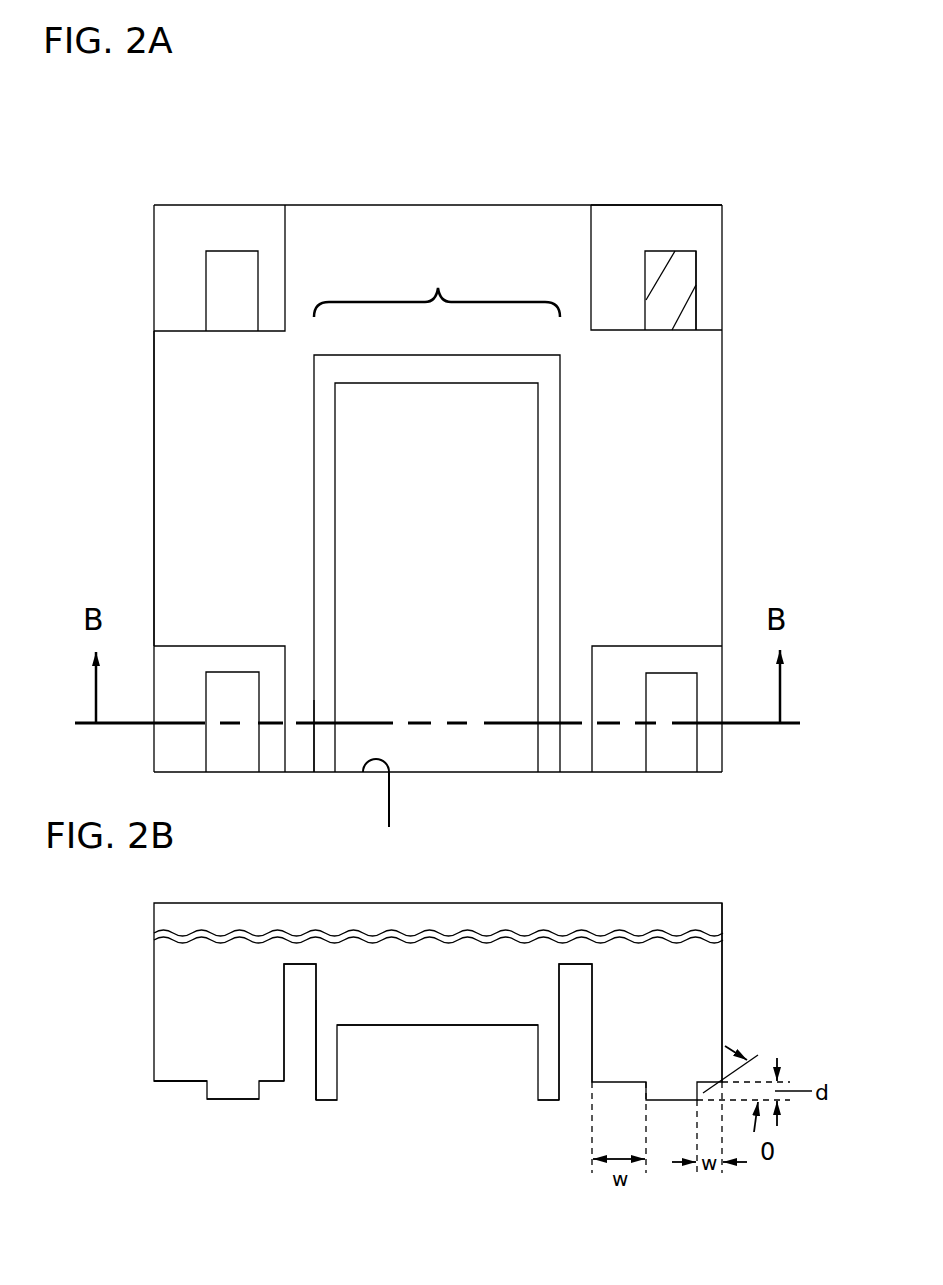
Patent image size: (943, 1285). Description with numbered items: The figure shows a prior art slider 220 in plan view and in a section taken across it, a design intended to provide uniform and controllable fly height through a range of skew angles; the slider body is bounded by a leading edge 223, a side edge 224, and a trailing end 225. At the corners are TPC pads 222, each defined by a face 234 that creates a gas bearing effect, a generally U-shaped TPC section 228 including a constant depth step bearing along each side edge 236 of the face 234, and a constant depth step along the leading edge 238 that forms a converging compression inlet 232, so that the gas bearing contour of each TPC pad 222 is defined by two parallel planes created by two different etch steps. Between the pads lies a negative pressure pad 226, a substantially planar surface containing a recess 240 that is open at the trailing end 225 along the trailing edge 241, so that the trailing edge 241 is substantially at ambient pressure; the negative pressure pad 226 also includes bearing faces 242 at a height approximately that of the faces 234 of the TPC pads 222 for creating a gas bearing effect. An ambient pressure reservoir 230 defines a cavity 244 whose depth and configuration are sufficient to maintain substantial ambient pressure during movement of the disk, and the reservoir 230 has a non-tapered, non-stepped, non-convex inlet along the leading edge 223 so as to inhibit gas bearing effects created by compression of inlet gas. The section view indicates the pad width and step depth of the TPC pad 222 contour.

In FIG. 2A, the stator pole structure 220 is at (82, 455).
In FIG. 2A, the TPC pad 222 is at (154, 251).
In FIG. 2B, the TPC pad 222 is at (133, 1103).
In FIG. 2A, the leading edge 223 is at (473, 205).
In FIG. 2A, the right side edge 224 is at (722, 438).
In FIG. 2B, the right side edge 224 is at (722, 970).
In FIG. 2A, the trailing end 225 is at (517, 772).
In FIG. 2A, the negative pressure pad 226 is at (489, 827).
In FIG. 2A, the TPC section 228 is at (712, 283).
In FIG. 2B, the TPC section 228 is at (179, 1081).
In FIG. 2A, the ambient pressure reservoir 230 is at (193, 499).
In FIG. 2B, the ambient pressure reservoir 230 is at (301, 1087).
In FIG. 2A, the converging compression inlet 232 is at (668, 227).
In FIG. 2A, the face 234 is at (687, 322).
In FIG. 2B, the face 234 is at (233, 1099).
In FIG. 2A, the side edge 236 is at (672, 330).
In FIG. 2A, the leading edge 238 is at (646, 300).
In FIG. 2B, the recess 240 is at (443, 1025).
In FIG. 2A, the trailing edge 241 is at (388, 811).
In FIG. 2A, the bearing face 242 is at (323, 763).
In FIG. 2B, the bearing face 242 is at (322, 1100).
In FIG. 2B, the cavity 244 is at (303, 1035).